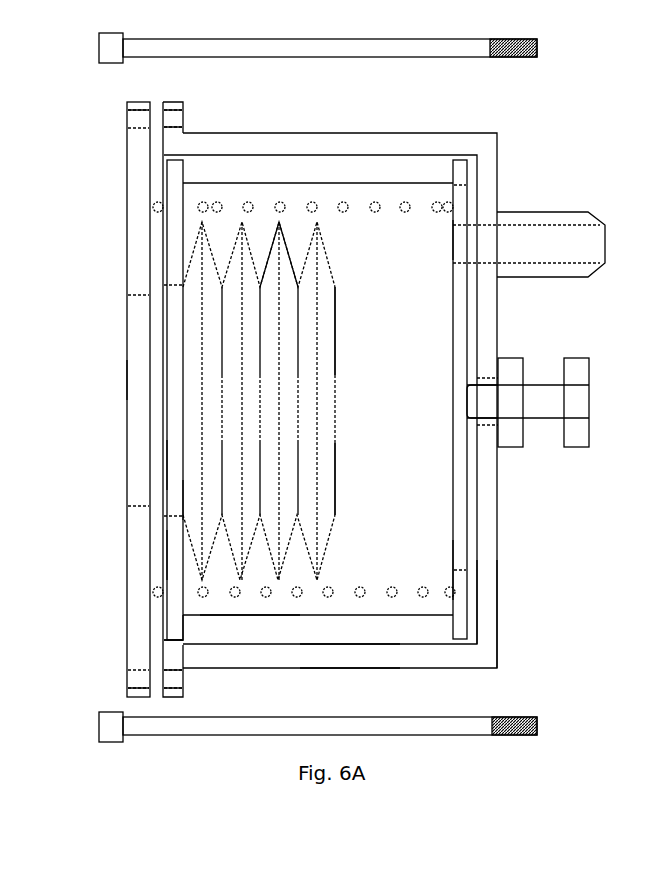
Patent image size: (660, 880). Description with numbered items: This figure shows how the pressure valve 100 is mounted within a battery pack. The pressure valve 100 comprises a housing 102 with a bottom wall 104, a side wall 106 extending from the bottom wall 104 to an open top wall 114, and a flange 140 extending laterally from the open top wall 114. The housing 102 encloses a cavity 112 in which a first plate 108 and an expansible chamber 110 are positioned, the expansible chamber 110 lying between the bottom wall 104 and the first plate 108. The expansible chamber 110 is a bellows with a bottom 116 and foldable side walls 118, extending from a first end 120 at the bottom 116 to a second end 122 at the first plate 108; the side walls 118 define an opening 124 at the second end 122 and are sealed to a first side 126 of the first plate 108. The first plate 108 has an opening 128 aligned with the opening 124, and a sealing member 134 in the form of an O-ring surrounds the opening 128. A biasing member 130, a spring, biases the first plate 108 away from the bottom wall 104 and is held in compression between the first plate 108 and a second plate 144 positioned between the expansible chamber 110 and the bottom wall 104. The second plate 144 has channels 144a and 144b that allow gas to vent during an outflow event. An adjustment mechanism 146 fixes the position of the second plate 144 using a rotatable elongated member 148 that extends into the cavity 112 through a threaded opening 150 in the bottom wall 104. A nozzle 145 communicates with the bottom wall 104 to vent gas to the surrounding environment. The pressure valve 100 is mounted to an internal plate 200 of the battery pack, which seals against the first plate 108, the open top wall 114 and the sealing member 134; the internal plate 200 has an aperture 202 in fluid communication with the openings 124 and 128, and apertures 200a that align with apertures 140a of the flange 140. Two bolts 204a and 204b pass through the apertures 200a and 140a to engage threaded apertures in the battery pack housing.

The pressure valve 100 is at (510, 101).
The housing 102 is at (399, 95).
The bottom wall 104 is at (499, 641).
The side wall 106 is at (345, 662).
The first plate 108 is at (173, 552).
The expansible chamber 110 is at (197, 330).
The cavity 112 is at (253, 605).
The open top wall 114 is at (163, 658).
The bottom 116 is at (335, 497).
The foldable side walls 118 is at (279, 221).
The first end 120 is at (335, 328).
The second end 122 is at (183, 498).
The opening 124 is at (183, 408).
The first side 126 is at (183, 620).
The opening 128 is at (173, 466).
The biasing member 130 is at (375, 202).
The sealing member 134 is at (160, 205).
The flange 140 is at (170, 103).
The apertures 140a is at (177, 119).
The second plate 144 is at (458, 180).
The channel 144a is at (458, 562).
The channel 144b is at (458, 238).
The nozzle 145 is at (590, 218).
The adjustment mechanism 146 is at (606, 407).
The elongated member 148 is at (543, 418).
The opening 150 is at (483, 418).
The internal plate 200 is at (128, 157).
The apertures 200a is at (137, 120).
The aperture 202 is at (127, 380).
The bolt 204a is at (306, 38).
The bolt 204b is at (254, 736).